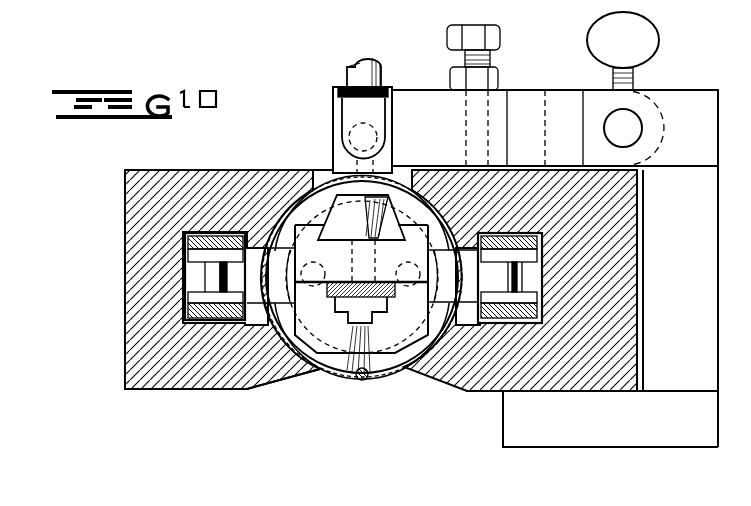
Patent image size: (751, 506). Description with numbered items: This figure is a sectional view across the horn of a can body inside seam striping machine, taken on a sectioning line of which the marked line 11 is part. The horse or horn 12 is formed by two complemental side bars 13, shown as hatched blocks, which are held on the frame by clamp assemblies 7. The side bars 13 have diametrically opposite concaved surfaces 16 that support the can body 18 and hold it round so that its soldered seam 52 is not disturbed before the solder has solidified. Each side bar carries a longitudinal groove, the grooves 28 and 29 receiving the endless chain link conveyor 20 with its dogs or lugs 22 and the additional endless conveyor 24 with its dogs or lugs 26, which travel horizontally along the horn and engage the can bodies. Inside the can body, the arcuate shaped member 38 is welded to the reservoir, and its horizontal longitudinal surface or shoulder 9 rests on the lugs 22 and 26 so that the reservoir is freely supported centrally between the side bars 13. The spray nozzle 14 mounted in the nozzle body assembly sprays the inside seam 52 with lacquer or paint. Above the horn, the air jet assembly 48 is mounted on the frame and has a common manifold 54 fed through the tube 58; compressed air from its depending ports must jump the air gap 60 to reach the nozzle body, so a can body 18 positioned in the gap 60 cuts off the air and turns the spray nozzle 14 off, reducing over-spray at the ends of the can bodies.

The clamp assembly 7 is at (686, 86).
The horizontal longitudinal surface or shoulder 9 is at (281, 253).
The section line 11- 11 is at (53, 0).
The horse or horn 12 is at (251, 402).
The side bar 13 is at (237, 170).
The spray nozzle 14 is at (380, 300).
The concaved surface 16 is at (292, 380).
The can body 18 is at (328, 382).
The endless chain link conveyor 20 is at (543, 233).
The dog or lug 22 is at (467, 287).
The endless conveyor 24 is at (188, 233).
The dog or lug 26 is at (233, 285).
The longitudinal groove 28 is at (543, 275).
The longitudinal groove 29 is at (183, 272).
The arcuate shaped member 38 is at (300, 180).
The air jet assembly 48 is at (320, 120).
The soldered seam 52 is at (367, 382).
The common manifold 54 is at (382, 135).
The tube 58 is at (346, 80).
The air gap 60 is at (323, 172).